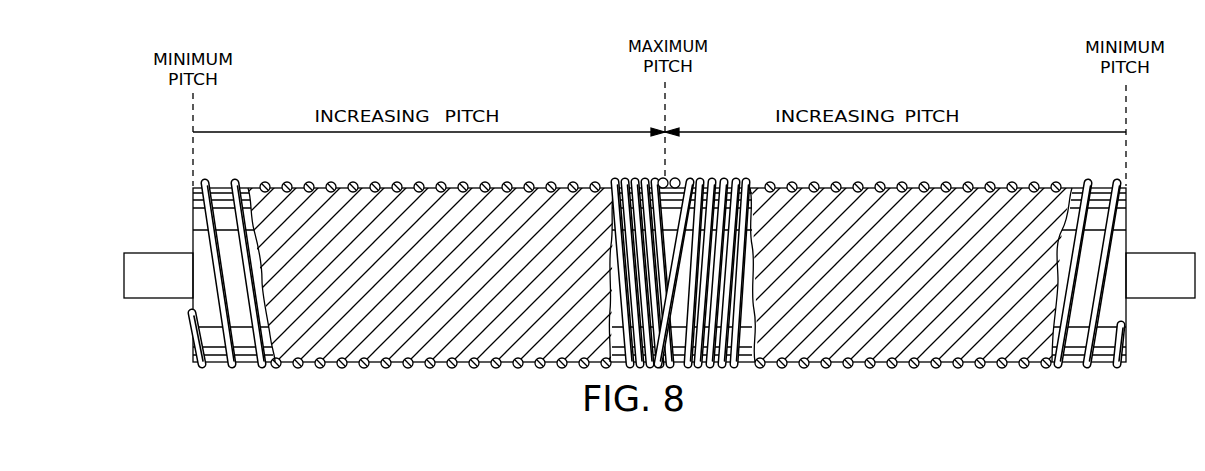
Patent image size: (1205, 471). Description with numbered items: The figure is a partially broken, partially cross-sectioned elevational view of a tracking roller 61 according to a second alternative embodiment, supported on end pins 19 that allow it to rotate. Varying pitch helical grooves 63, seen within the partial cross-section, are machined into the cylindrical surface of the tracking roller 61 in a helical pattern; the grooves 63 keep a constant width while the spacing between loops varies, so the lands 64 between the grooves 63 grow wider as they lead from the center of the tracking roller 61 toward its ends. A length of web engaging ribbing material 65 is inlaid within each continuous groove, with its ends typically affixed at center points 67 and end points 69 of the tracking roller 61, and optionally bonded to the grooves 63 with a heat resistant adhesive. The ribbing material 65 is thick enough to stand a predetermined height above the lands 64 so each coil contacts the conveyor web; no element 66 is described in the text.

The end pins 19 is at (1143, 298).
The tracking roller 61 is at (405, 369).
The helical grooves 63 is at (988, 368).
The lands 64 is at (231, 366).
The web engaging ribbing material 65 is at (903, 368).
The end wire wrap 66 is at (1089, 273).
The center points 67 is at (668, 258).
The end points 69 is at (192, 313).